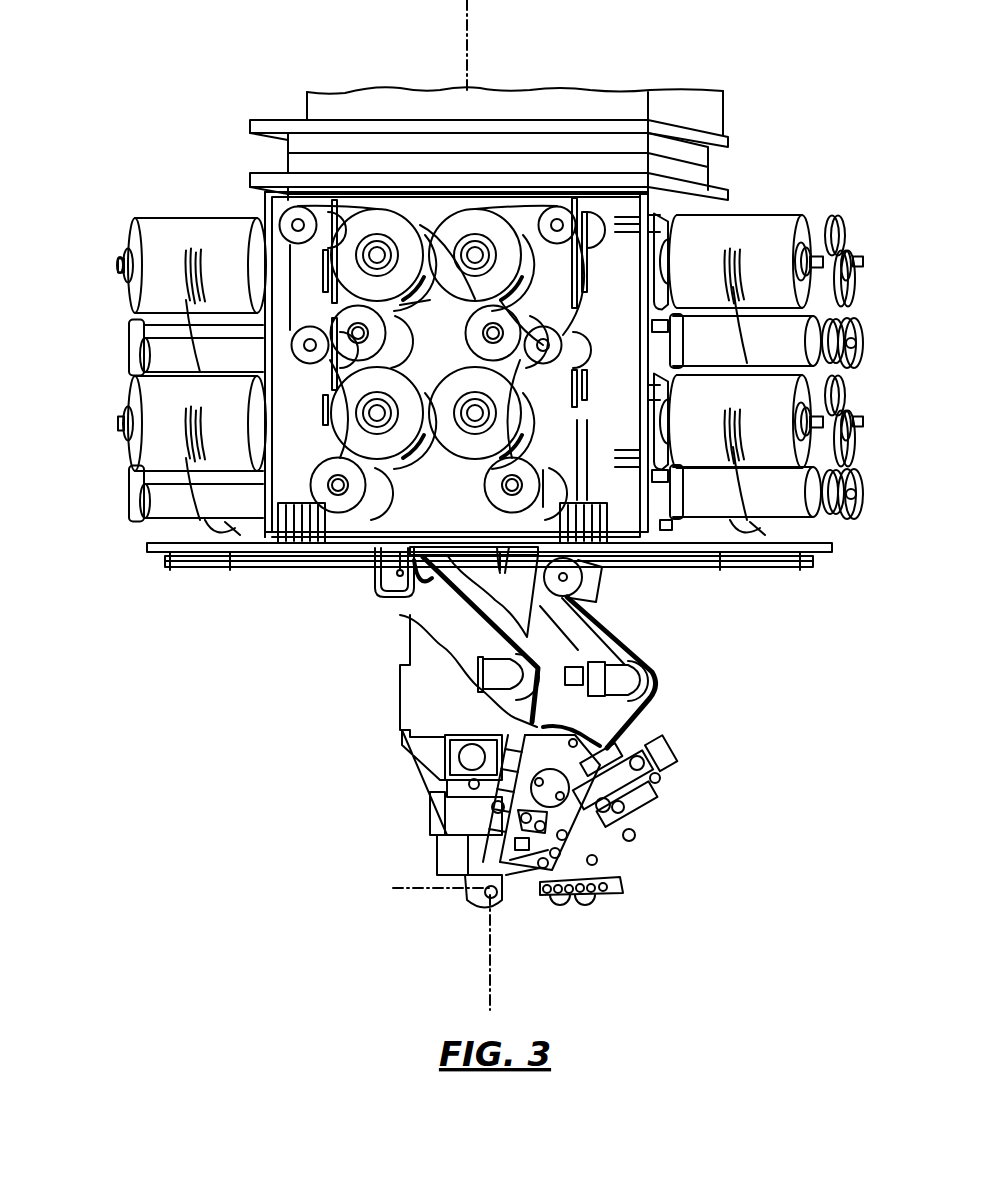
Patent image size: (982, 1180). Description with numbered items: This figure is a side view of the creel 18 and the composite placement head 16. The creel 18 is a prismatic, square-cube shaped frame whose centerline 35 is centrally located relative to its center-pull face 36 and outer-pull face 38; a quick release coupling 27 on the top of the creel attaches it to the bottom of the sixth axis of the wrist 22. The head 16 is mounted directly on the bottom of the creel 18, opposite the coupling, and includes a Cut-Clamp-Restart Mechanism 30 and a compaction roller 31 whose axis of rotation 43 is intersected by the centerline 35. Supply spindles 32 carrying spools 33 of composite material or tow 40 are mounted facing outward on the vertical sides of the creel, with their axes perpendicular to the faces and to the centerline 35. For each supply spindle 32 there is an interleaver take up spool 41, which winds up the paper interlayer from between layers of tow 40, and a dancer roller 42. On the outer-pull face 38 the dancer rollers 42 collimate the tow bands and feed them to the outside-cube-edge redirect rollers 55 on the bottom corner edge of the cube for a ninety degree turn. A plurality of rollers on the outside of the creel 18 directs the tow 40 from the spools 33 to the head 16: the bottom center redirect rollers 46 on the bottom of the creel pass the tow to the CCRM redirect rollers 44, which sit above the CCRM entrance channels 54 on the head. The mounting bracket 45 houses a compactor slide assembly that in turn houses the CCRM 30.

The composite placement head 16 is at (503, 749).
The creel 18 is at (92, 333).
The wrist 22 is at (320, 106).
The quick release coupling 27 is at (718, 165).
The Cut-Clamp-Restart Mechanism (CCRM) 30 is at (506, 833).
The compaction roller 31 is at (481, 908).
The supply spindle 32 is at (121, 263).
The spool 33 is at (465, 226).
The centerline 35 is at (467, 37).
The center-pull face 36 is at (654, 323).
The outer-pull face 38 is at (624, 354).
The tow 40 is at (200, 372).
The interleaver take up spool 41 is at (405, 358).
The dancer roller 42 is at (597, 235).
The axis of rotation 43 is at (418, 893).
The CCRM redirect roller 44 is at (525, 673).
The mounting bracket 45 is at (410, 687).
The bottom center redirect roller 46 is at (434, 583).
The CCRM entrance channel 54 is at (545, 727).
The outside-cube-edge redirect roller 55 is at (306, 561).